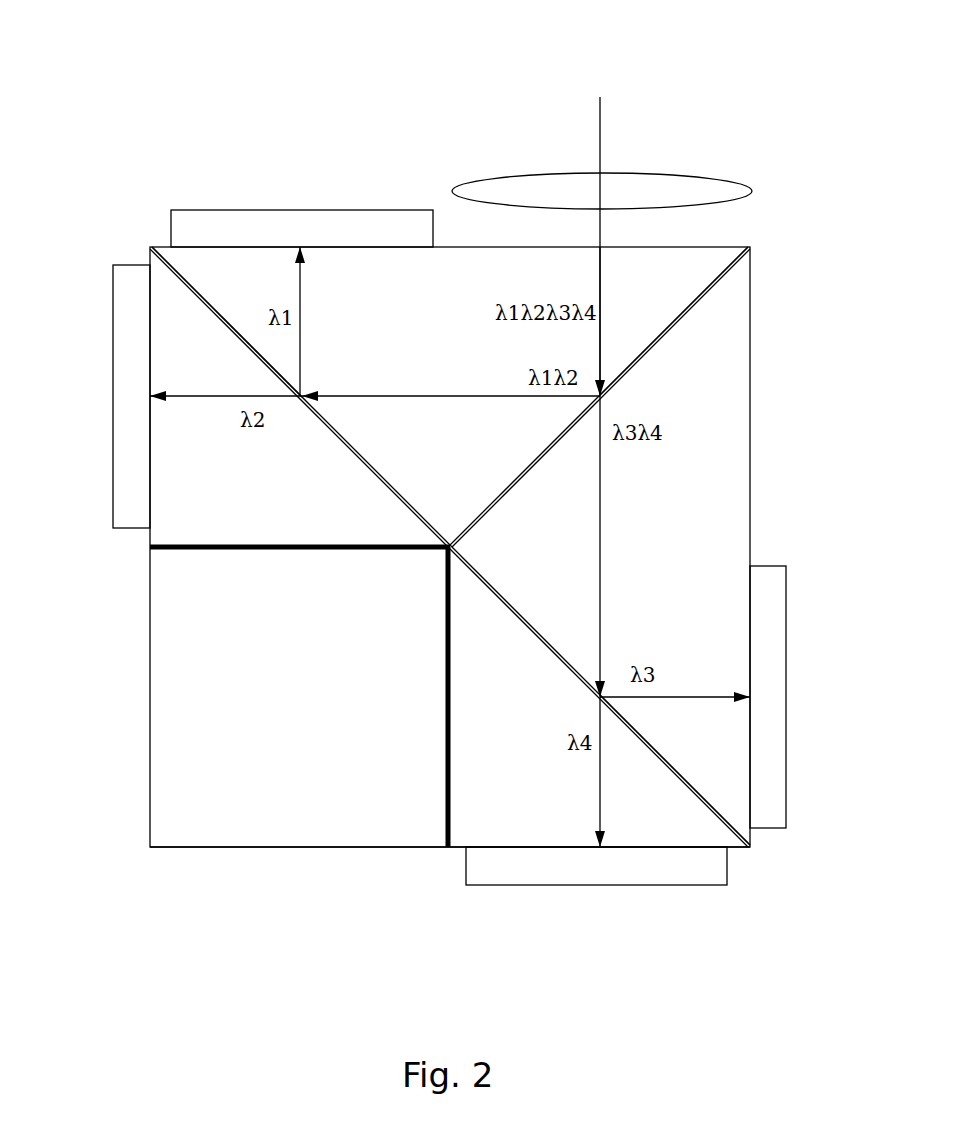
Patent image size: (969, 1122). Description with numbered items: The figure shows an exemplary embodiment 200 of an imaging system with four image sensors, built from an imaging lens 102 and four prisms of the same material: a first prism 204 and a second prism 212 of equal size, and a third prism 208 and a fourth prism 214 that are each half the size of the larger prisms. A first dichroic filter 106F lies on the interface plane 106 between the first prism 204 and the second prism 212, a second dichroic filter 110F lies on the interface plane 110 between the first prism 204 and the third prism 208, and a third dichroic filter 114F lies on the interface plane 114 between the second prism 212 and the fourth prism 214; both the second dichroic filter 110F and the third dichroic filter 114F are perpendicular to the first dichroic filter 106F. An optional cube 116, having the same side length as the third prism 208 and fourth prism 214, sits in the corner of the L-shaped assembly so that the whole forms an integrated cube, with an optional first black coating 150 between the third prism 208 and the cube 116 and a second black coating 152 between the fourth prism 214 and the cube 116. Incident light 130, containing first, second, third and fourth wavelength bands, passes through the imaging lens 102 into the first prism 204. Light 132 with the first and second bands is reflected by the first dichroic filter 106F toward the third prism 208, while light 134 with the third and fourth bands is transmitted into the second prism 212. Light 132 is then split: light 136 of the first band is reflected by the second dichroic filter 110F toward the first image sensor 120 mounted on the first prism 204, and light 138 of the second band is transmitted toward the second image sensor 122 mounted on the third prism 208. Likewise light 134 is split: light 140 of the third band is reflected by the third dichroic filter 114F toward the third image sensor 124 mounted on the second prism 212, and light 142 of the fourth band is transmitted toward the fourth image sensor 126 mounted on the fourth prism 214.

The embodiment of imaging system 200 is at (211, 79).
The imaging lens 102 is at (686, 173).
The incident light 130 is at (600, 137).
The first image sensor 120 is at (237, 210).
The second image sensor 122 is at (112, 475).
The third image sensor 124 is at (787, 622).
The fourth image sensor 126 is at (690, 885).
The cube 116 is at (372, 847).
The interface plane of first prism and third prism 110 is at (370, 480).
The second dichroic filter 110F is at (253, 288).
The interface plane of first prism and second prism 106 is at (535, 470).
The first dichroic filter 106F is at (685, 310).
The interface plane of second prism and fourth prism 114 is at (555, 663).
The third dichroic filter 114F is at (712, 755).
The first black coating 150 is at (360, 550).
The second black coating 152 is at (447, 655).
The light having first and second wavelength bands 132 is at (463, 397).
The light having third and fourth wavelength bands 134 is at (599, 528).
The light having first wavelength band 136 is at (303, 353).
The light having second wavelength band 138 is at (227, 377).
The light having third wavelength band 140 is at (685, 695).
The light having fourth wavelength band 142 is at (598, 815).
The first prism 204 is at (450, 397).
The third prism 208 is at (300, 397).
The second prism 212 is at (600, 547).
The fourth prism 214 is at (600, 697).